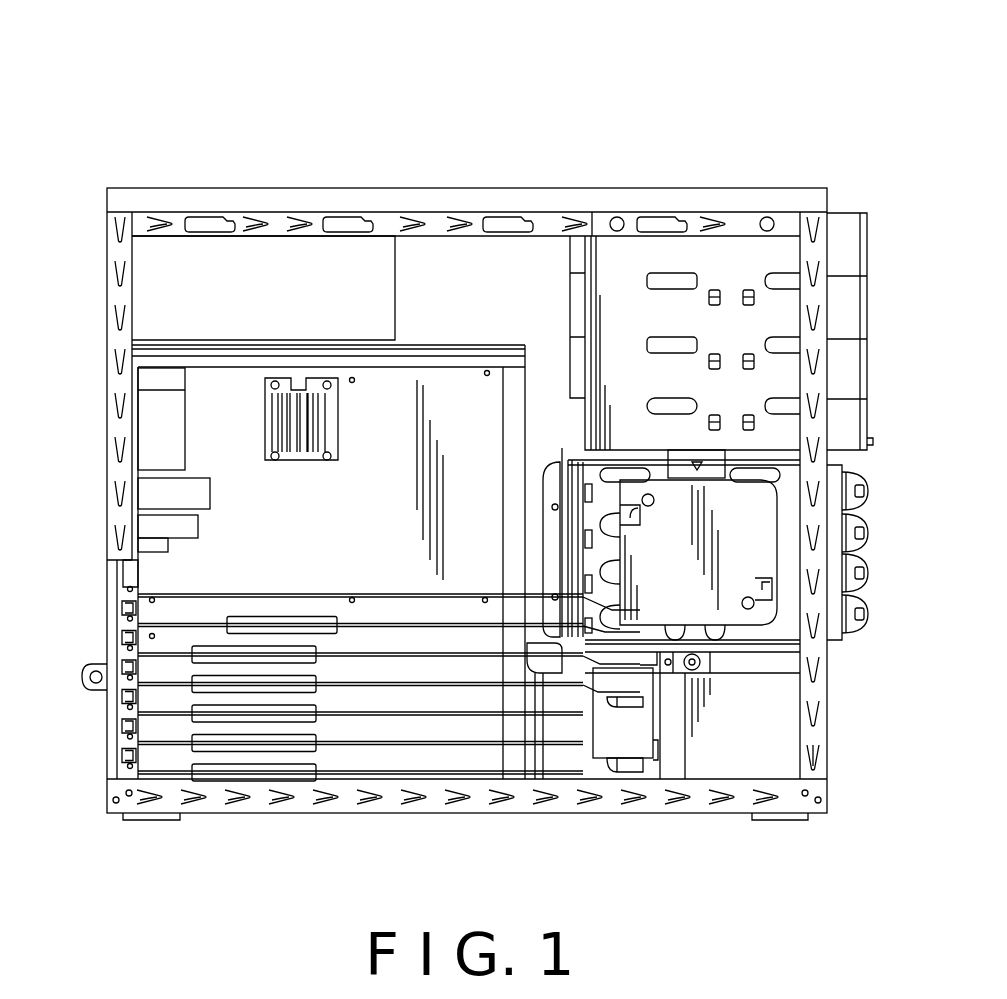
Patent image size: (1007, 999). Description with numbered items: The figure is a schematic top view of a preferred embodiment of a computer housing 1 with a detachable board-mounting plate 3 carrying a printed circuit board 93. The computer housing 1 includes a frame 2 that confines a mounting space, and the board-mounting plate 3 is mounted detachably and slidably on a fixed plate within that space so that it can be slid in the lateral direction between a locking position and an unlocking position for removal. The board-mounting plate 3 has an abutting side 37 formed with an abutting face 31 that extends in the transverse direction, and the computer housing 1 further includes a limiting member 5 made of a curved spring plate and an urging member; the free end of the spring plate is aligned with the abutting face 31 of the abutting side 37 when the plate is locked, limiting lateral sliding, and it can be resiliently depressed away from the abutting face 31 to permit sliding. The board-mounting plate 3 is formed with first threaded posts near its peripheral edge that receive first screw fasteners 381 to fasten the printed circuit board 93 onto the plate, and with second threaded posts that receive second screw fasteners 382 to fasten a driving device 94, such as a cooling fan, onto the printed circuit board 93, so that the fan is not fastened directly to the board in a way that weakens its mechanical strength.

The computer housing 1 is at (774, 153).
The frame 2 is at (372, 188).
The board-mounting plate 3 is at (428, 375).
The limiting member 5 is at (553, 686).
The abutting face 31 is at (560, 692).
The abutting side 37 is at (517, 478).
The printed circuit board 93 is at (222, 376).
The driving device 94 is at (300, 388).
The first screw fasteners 381 is at (487, 372).
The second screw fasteners 382 is at (268, 388).